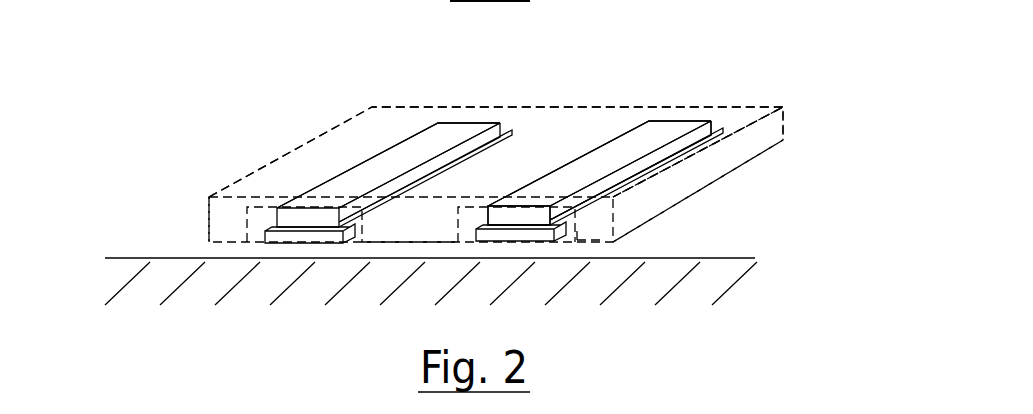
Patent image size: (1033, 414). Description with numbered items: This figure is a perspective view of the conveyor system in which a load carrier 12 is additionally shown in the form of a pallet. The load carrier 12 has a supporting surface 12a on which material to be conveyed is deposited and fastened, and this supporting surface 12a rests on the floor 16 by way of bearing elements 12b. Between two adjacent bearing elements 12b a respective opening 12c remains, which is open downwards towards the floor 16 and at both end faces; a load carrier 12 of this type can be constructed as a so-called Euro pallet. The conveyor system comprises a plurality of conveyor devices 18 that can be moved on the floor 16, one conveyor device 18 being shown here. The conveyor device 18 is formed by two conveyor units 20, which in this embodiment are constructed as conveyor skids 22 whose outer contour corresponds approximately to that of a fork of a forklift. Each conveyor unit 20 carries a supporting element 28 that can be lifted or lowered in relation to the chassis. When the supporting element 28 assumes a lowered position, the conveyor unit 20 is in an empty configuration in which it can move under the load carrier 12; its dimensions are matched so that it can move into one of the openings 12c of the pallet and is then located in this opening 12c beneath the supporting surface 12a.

The load carrier 12 is at (728, 105).
The supporting surface 12a is at (563, 128).
The bearing element 12b is at (220, 225).
The opening 12c is at (247, 215).
The floor 16 is at (178, 167).
The conveyor device 18 is at (712, 48).
The conveyor unit 20 is at (508, 135).
The conveyor skid 22 is at (441, 125).
The supporting element 28 is at (400, 162).